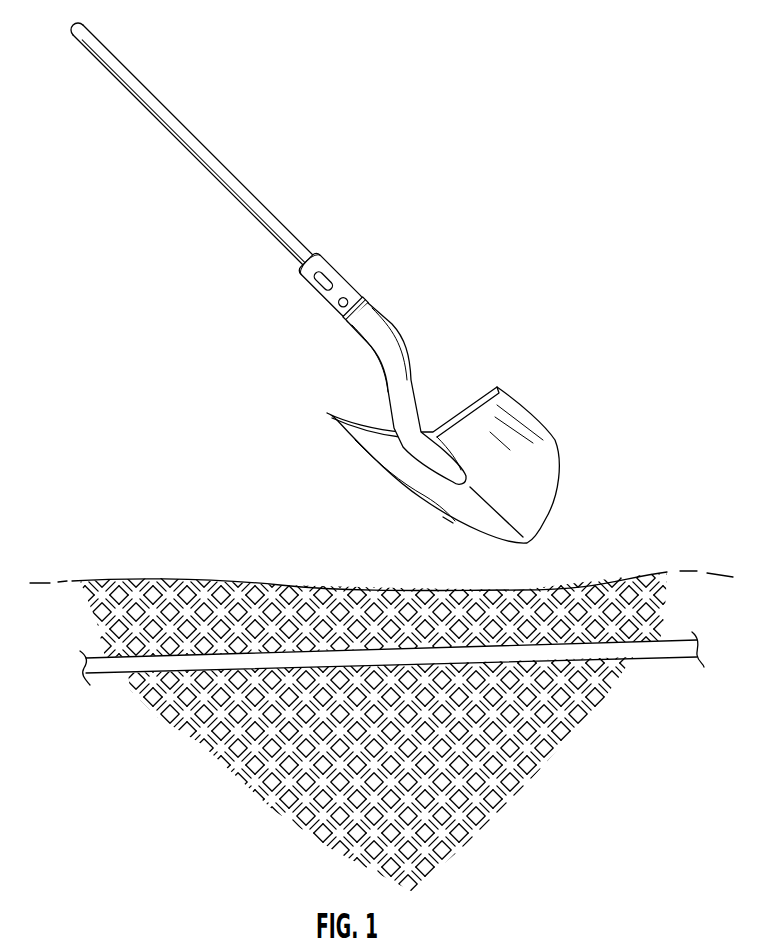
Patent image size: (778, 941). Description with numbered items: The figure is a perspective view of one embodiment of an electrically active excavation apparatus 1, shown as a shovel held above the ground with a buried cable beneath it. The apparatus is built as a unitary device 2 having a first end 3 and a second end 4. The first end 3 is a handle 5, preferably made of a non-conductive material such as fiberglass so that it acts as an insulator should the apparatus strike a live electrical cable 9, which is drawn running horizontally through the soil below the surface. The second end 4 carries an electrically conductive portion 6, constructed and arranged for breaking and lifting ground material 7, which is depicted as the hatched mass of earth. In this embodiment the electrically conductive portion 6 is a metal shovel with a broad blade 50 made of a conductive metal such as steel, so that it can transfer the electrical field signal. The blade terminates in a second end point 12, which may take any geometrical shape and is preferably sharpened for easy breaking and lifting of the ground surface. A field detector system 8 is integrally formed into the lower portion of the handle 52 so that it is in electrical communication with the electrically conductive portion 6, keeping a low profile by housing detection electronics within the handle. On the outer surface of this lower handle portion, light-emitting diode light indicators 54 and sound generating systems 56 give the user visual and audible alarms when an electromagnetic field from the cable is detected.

The electrically active excavation apparatus 1 is at (211, 111).
The unitary device 2 is at (344, 232).
The first end 3 is at (73, 37).
The second end 4 is at (550, 521).
The handle 5 is at (231, 198).
The electrically conductive portion 6 is at (514, 408).
The ground material 7 is at (166, 580).
The field detector system 8 is at (346, 288).
The live electrical cable 9 is at (670, 662).
The second end point 12 is at (528, 543).
The broad blade 50 is at (388, 483).
The lower portion of the handle 52 is at (319, 289).
The light-emitting diode light indicators 54 is at (312, 279).
The sound generating systems 56 is at (339, 306).